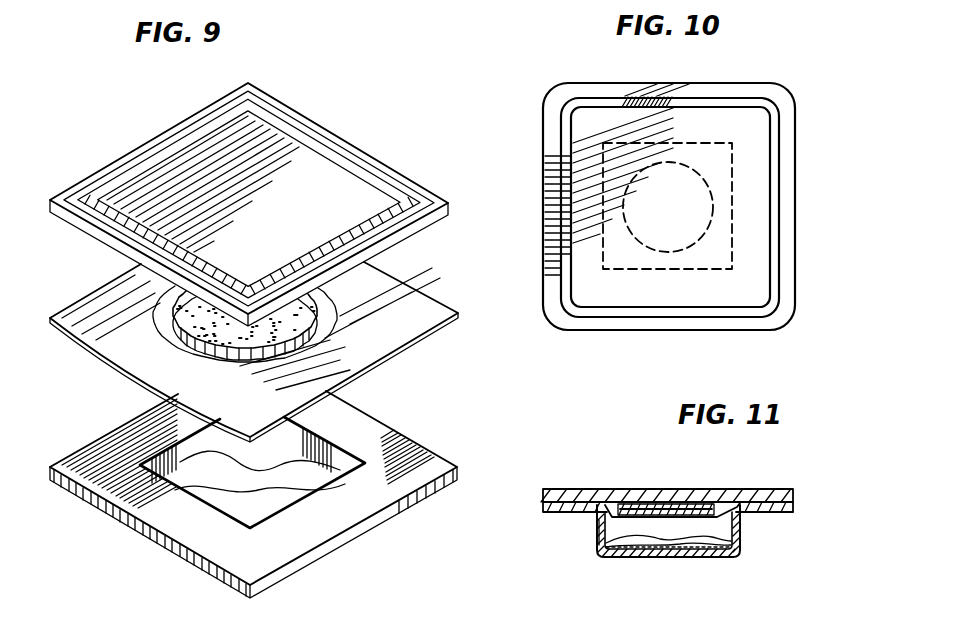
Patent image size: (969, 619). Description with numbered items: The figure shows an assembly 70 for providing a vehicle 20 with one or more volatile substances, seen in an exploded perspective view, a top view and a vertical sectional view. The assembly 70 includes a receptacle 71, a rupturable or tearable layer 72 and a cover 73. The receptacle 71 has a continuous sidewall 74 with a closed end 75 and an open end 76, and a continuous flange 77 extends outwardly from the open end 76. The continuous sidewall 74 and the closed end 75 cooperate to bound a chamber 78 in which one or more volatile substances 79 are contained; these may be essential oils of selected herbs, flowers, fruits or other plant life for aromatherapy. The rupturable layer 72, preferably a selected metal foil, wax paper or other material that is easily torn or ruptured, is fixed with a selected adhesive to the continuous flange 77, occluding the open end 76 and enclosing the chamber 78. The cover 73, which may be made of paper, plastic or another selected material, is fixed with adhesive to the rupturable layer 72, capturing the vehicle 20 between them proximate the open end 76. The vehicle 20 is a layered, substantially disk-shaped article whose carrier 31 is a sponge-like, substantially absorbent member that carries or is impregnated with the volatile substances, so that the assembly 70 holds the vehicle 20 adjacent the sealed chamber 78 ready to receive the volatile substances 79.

In FIG. 9, the vehicle 20 is at (316, 341).
In FIG. 10, the vehicle 20 is at (668, 207).
In FIG. 11, the vehicle 20 is at (666, 501).
In FIG. 11, the carrier 31 is at (716, 506).
In FIG. 9, the assembly 70 is at (345, 81).
In FIG. 10, the assembly 70 is at (560, 84).
In FIG. 11, the assembly 70 is at (591, 562).
In FIG. 9, the receptacle 71 is at (415, 456).
In FIG. 11, the receptacle 71 is at (742, 548).
In FIG. 9, the rupturable layer 72 is at (415, 305).
In FIG. 11, the rupturable layer 72 is at (792, 512).
In FIG. 9, the cover 73 is at (350, 178).
In FIG. 10, the cover 73 is at (752, 133).
In FIG. 11, the cover 73 is at (590, 491).
In FIG. 11, the continuous sidewall 74 is at (603, 530).
In FIG. 11, the closed end 75 is at (710, 556).
In FIG. 11, the open end 76 is at (613, 503).
In FIG. 9, the continuous flange 77 is at (315, 518).
In FIG. 11, the continuous flange 77 is at (750, 513).
In FIG. 9, the chamber 78 is at (235, 485).
In FIG. 11, the chamber 78 is at (640, 535).
In FIG. 9, the volatile substances 79 is at (305, 466).
In FIG. 11, the volatile substances 79 is at (660, 545).